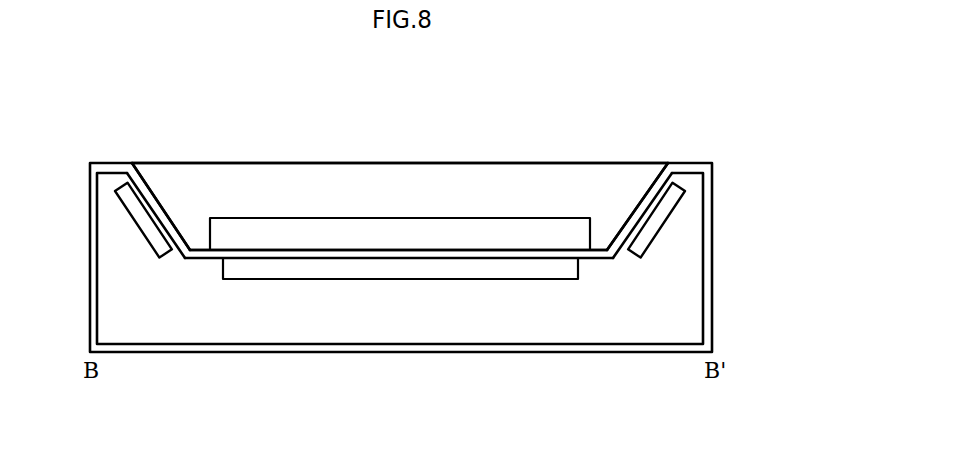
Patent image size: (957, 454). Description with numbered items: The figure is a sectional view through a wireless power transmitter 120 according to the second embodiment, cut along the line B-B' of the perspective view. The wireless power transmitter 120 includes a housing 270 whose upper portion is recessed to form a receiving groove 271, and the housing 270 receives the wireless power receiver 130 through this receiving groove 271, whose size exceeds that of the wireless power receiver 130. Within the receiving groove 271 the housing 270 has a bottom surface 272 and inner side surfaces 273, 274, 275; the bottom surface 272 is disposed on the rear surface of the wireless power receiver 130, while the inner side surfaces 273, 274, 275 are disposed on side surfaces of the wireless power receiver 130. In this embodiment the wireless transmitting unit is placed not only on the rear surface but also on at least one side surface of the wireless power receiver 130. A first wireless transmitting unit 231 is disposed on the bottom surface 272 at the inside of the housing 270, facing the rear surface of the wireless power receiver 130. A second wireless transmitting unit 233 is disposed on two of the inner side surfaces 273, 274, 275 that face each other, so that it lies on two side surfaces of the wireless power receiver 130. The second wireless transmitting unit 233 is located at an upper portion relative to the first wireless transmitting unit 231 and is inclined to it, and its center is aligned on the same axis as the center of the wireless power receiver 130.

The wireless power transmitter 120 is at (679, 140).
The wireless power receiver 130 is at (300, 225).
The first wireless transmitting unit 231 is at (403, 272).
The second wireless transmitting unit 233 is at (158, 238).
The housing 270 is at (697, 220).
The receiving groove 271 is at (393, 185).
The bottom surface 272 is at (507, 249).
The inner side surface 273 is at (617, 229).
The inner side surface 274 is at (522, 175).
The inner side surface 275 is at (178, 228).